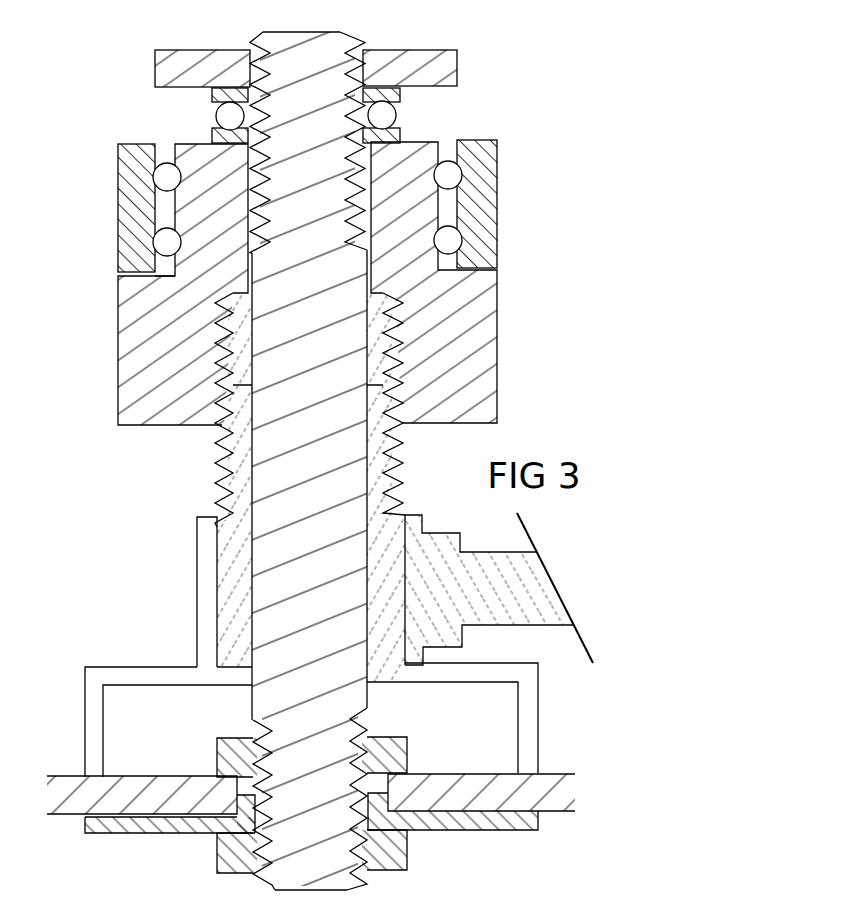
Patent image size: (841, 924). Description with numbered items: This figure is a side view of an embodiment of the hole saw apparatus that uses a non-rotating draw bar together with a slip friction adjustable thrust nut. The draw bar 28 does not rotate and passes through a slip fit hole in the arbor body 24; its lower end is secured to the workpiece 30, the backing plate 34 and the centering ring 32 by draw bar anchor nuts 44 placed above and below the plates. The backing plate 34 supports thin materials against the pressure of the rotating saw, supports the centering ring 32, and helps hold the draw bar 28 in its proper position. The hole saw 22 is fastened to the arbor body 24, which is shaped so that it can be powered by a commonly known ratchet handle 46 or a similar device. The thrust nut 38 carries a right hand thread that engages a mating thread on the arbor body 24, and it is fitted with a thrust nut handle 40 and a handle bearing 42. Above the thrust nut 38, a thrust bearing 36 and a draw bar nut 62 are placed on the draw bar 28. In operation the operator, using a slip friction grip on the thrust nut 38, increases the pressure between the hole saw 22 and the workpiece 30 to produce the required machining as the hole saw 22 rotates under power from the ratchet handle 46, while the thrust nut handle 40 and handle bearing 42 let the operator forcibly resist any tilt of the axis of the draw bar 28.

The hole saw 22 is at (93, 740).
The arbor body 24 is at (223, 457).
The draw bar 28 is at (305, 553).
The workpiece 30 is at (538, 790).
The centering ring 32 is at (227, 817).
The backing plate 34 is at (138, 828).
The thrust bearing 36 is at (405, 130).
The thrust nut 38 is at (480, 317).
The thrust nut handle 40 is at (475, 207).
The handle bearing 42 is at (450, 175).
The draw bar anchor nuts 44 is at (397, 753).
The ratchet handle 46 is at (575, 568).
The draw bar nut 62 is at (437, 68).